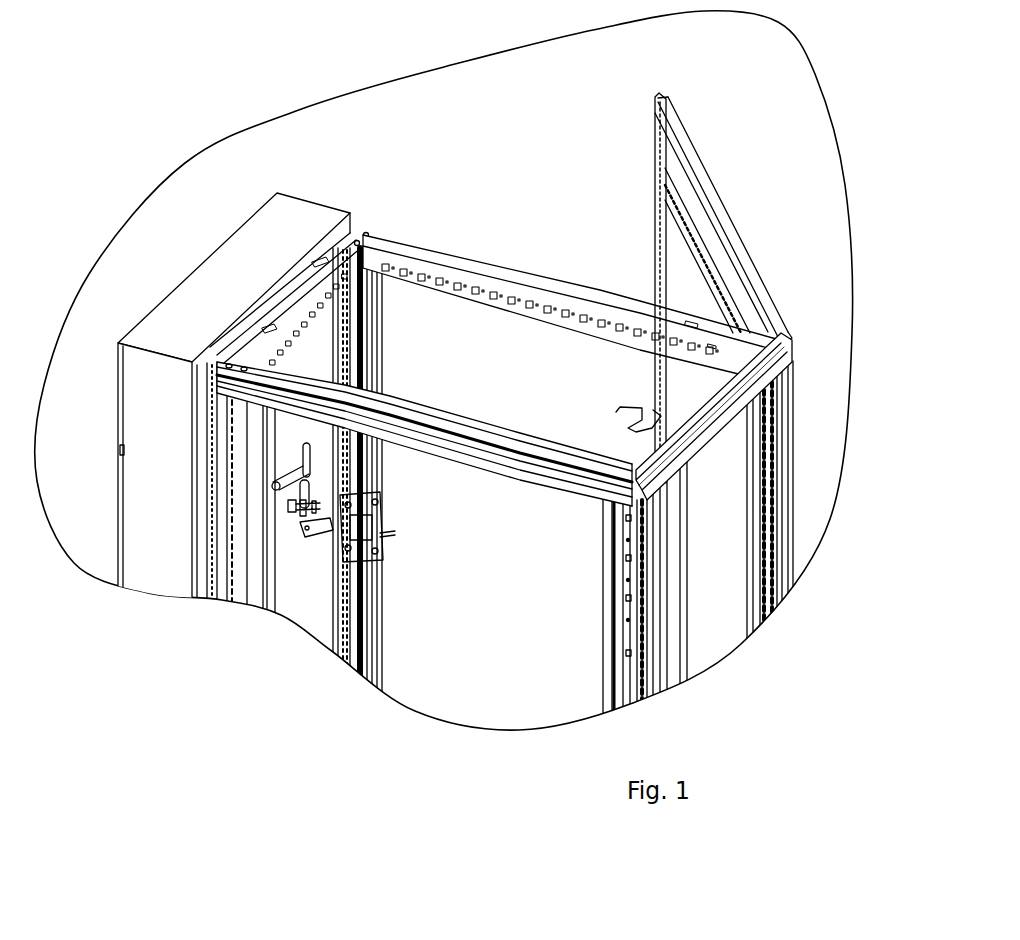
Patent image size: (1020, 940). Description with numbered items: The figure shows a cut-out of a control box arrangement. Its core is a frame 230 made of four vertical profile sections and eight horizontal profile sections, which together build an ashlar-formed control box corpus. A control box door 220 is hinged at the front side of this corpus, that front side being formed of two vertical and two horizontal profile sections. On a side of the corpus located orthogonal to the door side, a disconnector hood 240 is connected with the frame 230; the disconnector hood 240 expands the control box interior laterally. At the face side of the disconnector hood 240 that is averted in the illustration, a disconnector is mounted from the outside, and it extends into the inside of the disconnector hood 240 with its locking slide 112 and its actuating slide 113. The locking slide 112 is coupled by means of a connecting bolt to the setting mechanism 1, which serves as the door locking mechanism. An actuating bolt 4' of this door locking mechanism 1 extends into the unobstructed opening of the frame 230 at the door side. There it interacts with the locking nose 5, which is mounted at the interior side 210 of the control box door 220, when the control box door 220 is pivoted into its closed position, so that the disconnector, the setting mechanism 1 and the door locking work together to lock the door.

The setting mechanism 1 is at (316, 565).
The actuating bolt 4' is at (382, 527).
The locking nose 5 is at (628, 421).
The locking slide 112 is at (290, 517).
The actuating slide 113 is at (274, 488).
The interior side 210 is at (655, 248).
The control box door 220 is at (717, 192).
The frame 230 is at (471, 262).
The disconnector hood 240 is at (211, 266).